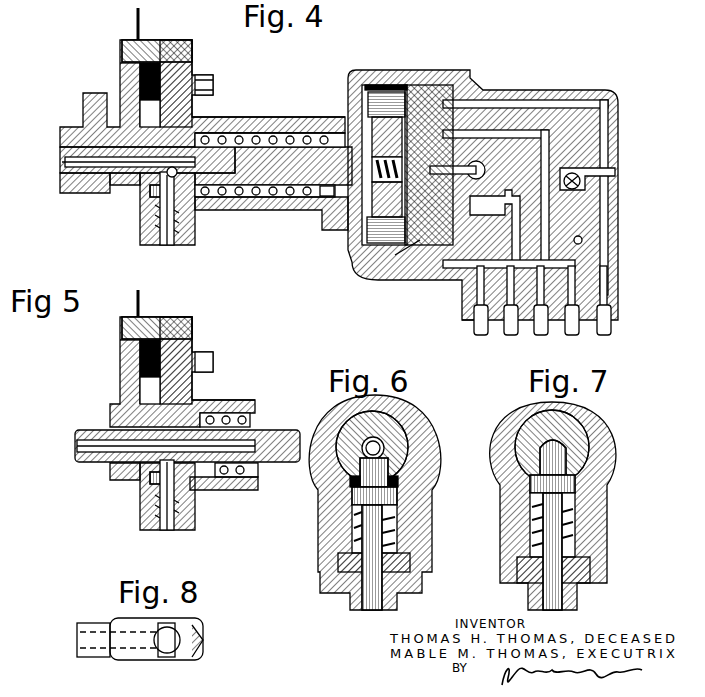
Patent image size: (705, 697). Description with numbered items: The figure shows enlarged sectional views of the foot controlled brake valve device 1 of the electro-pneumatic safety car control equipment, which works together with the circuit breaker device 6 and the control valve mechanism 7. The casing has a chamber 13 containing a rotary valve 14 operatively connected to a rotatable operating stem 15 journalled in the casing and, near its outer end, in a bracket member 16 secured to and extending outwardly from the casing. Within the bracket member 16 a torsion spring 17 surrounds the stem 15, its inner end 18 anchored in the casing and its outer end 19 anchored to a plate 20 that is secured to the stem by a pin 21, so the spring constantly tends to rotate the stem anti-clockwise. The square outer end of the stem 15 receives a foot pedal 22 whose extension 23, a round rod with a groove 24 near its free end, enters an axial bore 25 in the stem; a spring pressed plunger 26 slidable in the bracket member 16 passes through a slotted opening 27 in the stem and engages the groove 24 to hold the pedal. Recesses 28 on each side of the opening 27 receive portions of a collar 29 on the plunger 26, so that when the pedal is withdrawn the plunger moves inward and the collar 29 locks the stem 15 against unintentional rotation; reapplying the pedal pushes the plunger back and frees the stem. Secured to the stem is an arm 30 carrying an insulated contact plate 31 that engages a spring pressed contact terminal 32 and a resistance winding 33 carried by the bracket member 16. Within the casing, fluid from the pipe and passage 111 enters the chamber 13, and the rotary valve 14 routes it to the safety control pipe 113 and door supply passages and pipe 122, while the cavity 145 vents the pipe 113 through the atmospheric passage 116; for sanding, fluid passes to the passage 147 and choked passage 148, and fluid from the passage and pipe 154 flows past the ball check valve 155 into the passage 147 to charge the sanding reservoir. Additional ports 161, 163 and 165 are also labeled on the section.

In FIG. 4, the foot controlled brake valve device 1 is at (432, 92).
In FIG. 5, the foot controlled brake valve device 1 is at (245, 490).
In FIG. 6, the foot controlled brake valve device 1 is at (405, 420).
In FIG. 7, the foot controlled brake valve device 1 is at (607, 445).
In FIG. 4, the circuit breaker device 6 is at (160, 127).
In FIG. 5, the control valve mechanism 7 is at (160, 403).
In FIG. 4, the chamber 13 is at (380, 88).
In FIG. 4, the rotary valve 14 is at (422, 100).
In FIG. 4, the operating stem 15 is at (282, 128).
In FIG. 5, the operating stem 15 is at (252, 440).
In FIG. 6, the operating stem 15 is at (400, 432).
In FIG. 7, the operating stem 15 is at (578, 455).
In FIG. 8, the operating stem 15 is at (195, 630).
In FIG. 4, the bracket member 16 is at (250, 116).
In FIG. 5, the bracket member 16 is at (240, 402).
In FIG. 6, the bracket member 16 is at (420, 470).
In FIG. 7, the bracket member 16 is at (590, 475).
In FIG. 4, the torsion spring 17 is at (306, 130).
In FIG. 5, the torsion spring 17 is at (245, 416).
In FIG. 4, the inner end of torsion spring 18 is at (318, 210).
In FIG. 4, the outer end of torsion spring 19 is at (210, 130).
In FIG. 5, the outer end of torsion spring 19 is at (215, 412).
In FIG. 4, the plate 20 is at (248, 197).
In FIG. 5, the plate 20 is at (210, 490).
In FIG. 4, the pin 21 is at (222, 156).
In FIG. 5, the pin 21 is at (208, 434).
In FIG. 4, the foot pedal 22 is at (90, 106).
In FIG. 4, the extension 23 is at (62, 184).
In FIG. 6, the extension 23 is at (384, 444).
In FIG. 4, the groove 24 is at (172, 165).
In FIG. 6, the groove 24 is at (379, 451).
In FIG. 5, the axial bore 25 is at (95, 462).
In FIG. 7, the axial bore 25 is at (556, 440).
In FIG. 4, the spring pressed plunger 26 is at (158, 228).
In FIG. 5, the spring pressed plunger 26 is at (158, 510).
In FIG. 6, the spring pressed plunger 26 is at (370, 528).
In FIG. 7, the spring pressed plunger 26 is at (552, 525).
In FIG. 6, the slotted opening 27 is at (350, 465).
In FIG. 7, the slotted opening 27 is at (572, 470).
In FIG. 8, the slotted opening 27 is at (165, 650).
In FIG. 4, the recess 28 is at (200, 190).
In FIG. 6, the recess 28 is at (392, 480).
In FIG. 8, the recess 28 is at (170, 628).
In FIG. 4, the collar 29 is at (150, 200).
In FIG. 5, the collar 29 is at (150, 482).
In FIG. 6, the collar 29 is at (360, 495).
In FIG. 7, the collar 29 is at (545, 486).
In FIG. 4, the arm 30 is at (120, 75).
In FIG. 5, the arm 30 is at (120, 384).
In FIG. 4, the contact plate 31 is at (122, 50).
In FIG. 5, the contact plate 31 is at (122, 356).
In FIG. 4, the contact terminal 32 is at (153, 40).
In FIG. 5, the contact terminal 32 is at (153, 317).
In FIG. 4, the resistance winding 33 is at (128, 40).
In FIG. 5, the resistance winding 33 is at (126, 326).
In FIG. 4, the pipe and passage 111 is at (430, 262).
In FIG. 4, the safety control pipe 113 is at (474, 328).
In FIG. 4, the atmospheric passage 116 is at (480, 165).
In FIG. 4, the door supply passages and pipe 122 is at (508, 212).
In FIG. 4, the cavity 145 is at (395, 255).
In FIG. 4, the passage 147 is at (604, 210).
In FIG. 4, the choked passage 148 is at (582, 240).
In FIG. 4, the passage and pipe 154 is at (513, 322).
In FIG. 4, the ball check valve 155 is at (580, 181).
In FIG. 4, the port 161 is at (450, 0).
In FIG. 4, the port 163 is at (486, 0).
In FIG. 4, the port 165 is at (548, 0).